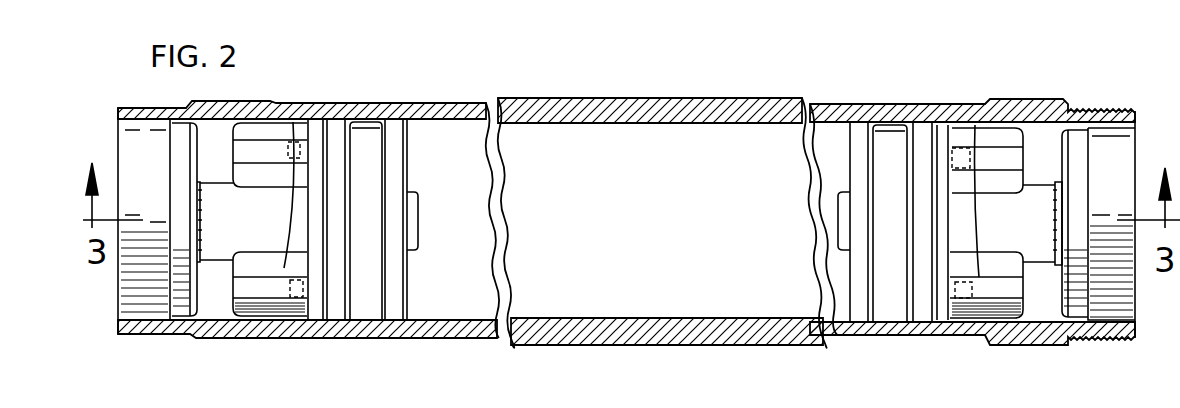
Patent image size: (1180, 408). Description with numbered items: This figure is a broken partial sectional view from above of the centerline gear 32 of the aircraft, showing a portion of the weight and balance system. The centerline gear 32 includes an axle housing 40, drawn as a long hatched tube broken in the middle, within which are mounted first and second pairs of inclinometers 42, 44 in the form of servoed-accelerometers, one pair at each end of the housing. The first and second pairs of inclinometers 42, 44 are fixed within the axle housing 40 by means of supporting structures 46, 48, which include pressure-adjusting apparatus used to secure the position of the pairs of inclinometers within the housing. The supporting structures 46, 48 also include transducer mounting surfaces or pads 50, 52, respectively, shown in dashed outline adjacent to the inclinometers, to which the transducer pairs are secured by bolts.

The centerline gear 32 is at (698, 345).
The axle housing 40 is at (492, 332).
The first pair of inclinometers 42 is at (990, 167).
The second pair of inclinometers 44 is at (252, 168).
The supporting structure 46 is at (892, 167).
The supporting structure 48 is at (373, 182).
The transducer mounting pads 50 is at (967, 163).
The transducer mounting pads 52 is at (307, 148).